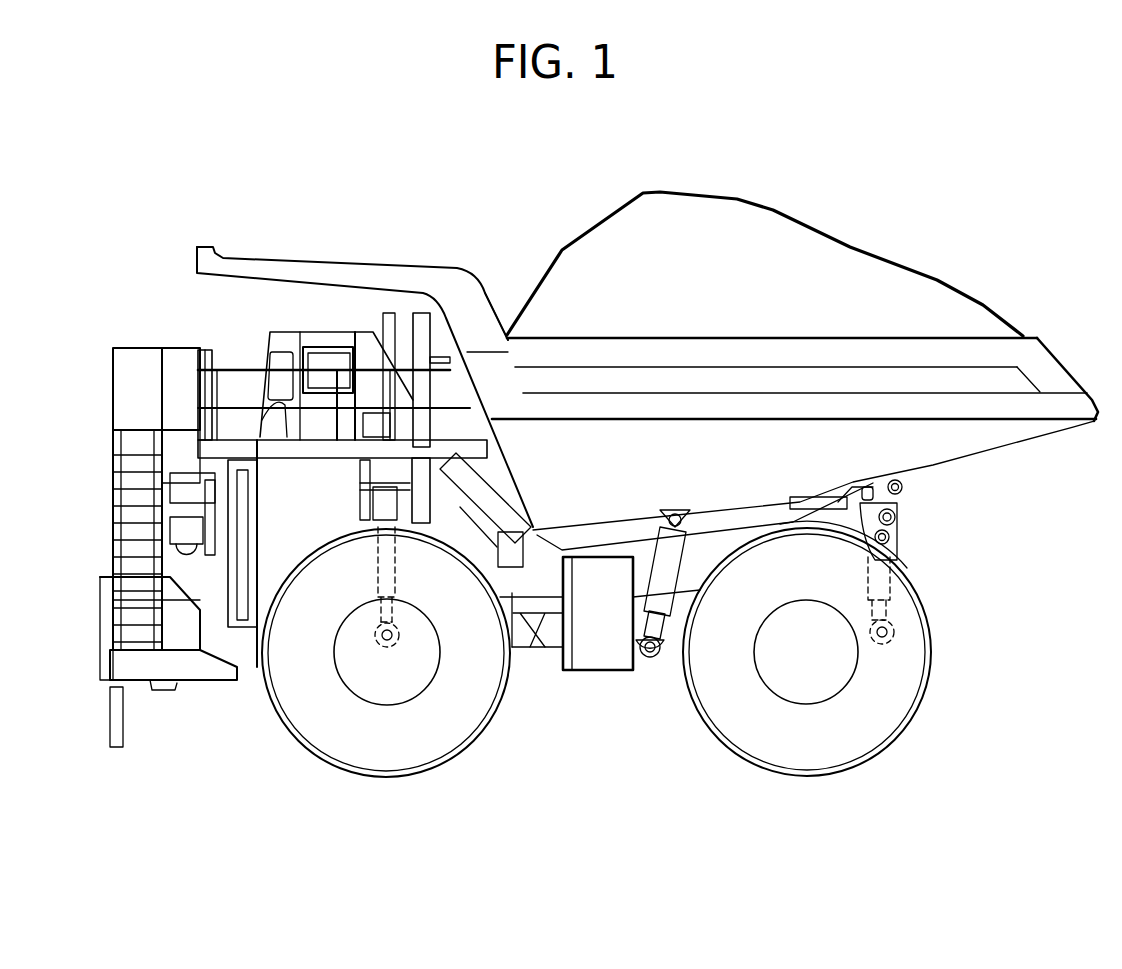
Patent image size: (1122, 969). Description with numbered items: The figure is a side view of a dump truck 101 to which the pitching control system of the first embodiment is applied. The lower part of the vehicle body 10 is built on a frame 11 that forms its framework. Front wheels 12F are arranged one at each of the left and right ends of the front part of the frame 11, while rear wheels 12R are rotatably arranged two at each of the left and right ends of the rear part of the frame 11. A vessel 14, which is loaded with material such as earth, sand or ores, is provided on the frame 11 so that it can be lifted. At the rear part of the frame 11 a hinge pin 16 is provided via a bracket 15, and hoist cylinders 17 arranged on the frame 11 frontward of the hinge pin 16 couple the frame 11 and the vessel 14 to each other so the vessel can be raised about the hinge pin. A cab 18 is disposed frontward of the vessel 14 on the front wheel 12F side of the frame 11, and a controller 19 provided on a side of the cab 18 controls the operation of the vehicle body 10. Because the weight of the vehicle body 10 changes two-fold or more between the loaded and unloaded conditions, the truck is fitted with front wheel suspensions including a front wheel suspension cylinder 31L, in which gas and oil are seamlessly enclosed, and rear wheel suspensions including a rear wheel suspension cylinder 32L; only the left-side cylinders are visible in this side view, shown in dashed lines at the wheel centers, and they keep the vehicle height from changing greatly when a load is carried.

The dump truck 101 is at (246, 141).
The vehicle body 10 is at (213, 687).
The frame 11 is at (512, 600).
The front wheels 12F is at (405, 762).
The rear wheels 12R is at (822, 765).
The vessel 14 is at (985, 352).
The bracket 15 is at (915, 472).
The hinge pin 16 is at (875, 495).
The hoist cylinders 17 is at (660, 650).
The cab 18 is at (270, 342).
The controller 19 is at (377, 425).
The left front wheel suspension cylinder 31L is at (375, 567).
The left rear wheel suspension cylinder 32L is at (890, 578).